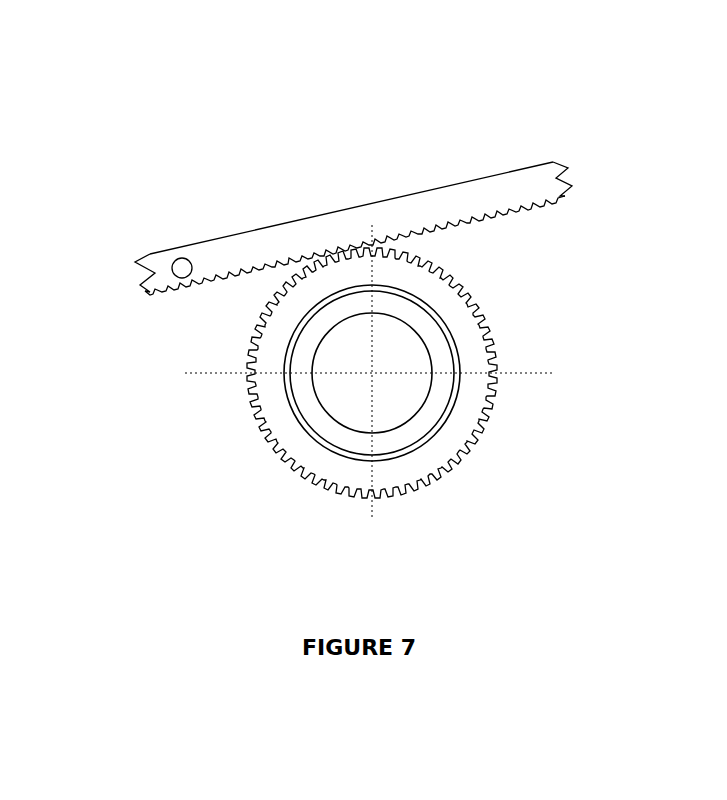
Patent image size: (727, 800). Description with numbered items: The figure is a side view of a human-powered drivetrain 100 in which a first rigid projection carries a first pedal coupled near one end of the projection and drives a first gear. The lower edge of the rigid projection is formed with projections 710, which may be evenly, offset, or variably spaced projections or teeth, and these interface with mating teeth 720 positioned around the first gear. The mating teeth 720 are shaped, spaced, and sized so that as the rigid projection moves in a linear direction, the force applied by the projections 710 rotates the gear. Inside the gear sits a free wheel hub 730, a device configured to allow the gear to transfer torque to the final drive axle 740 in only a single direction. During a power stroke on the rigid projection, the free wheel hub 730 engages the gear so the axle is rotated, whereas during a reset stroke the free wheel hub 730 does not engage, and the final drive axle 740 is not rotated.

The human-powered drivetrain 100 is at (185, 117).
The projections 710 is at (490, 220).
The mating teeth 720 is at (499, 412).
The free wheel hub 730 is at (442, 428).
The final drive axle 740 is at (390, 430).